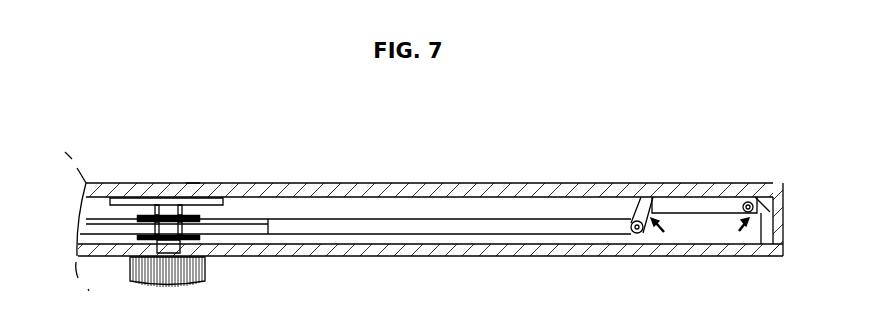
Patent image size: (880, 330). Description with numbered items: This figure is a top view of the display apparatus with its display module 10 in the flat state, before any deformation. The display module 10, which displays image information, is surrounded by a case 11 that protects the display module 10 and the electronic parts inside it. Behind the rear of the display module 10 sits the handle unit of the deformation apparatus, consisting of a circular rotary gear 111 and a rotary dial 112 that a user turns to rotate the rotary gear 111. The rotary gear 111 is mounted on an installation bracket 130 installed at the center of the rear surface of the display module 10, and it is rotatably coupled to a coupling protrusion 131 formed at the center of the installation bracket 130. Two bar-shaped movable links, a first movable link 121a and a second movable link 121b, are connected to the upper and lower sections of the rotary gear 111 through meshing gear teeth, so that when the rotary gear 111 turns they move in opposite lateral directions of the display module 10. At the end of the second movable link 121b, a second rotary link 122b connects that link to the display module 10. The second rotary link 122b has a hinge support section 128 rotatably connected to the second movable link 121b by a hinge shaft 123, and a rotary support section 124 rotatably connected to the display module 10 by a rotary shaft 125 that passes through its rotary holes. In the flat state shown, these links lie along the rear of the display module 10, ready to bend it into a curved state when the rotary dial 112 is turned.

The display module 10 is at (374, 182).
The case 11 is at (785, 247).
The rotary gear 111 is at (188, 182).
The rotary dial 112 is at (207, 268).
The first movable link 121a is at (104, 225).
The second movable link 121b is at (512, 218).
The second rotary link 122b is at (700, 202).
The hinge shaft 123 is at (626, 222).
The rotary support section 124 is at (742, 238).
The rotary shaft 125 is at (753, 211).
The hinge support section 128 is at (659, 236).
The installation bracket 130 is at (195, 200).
The coupling protrusion 131 is at (146, 198).